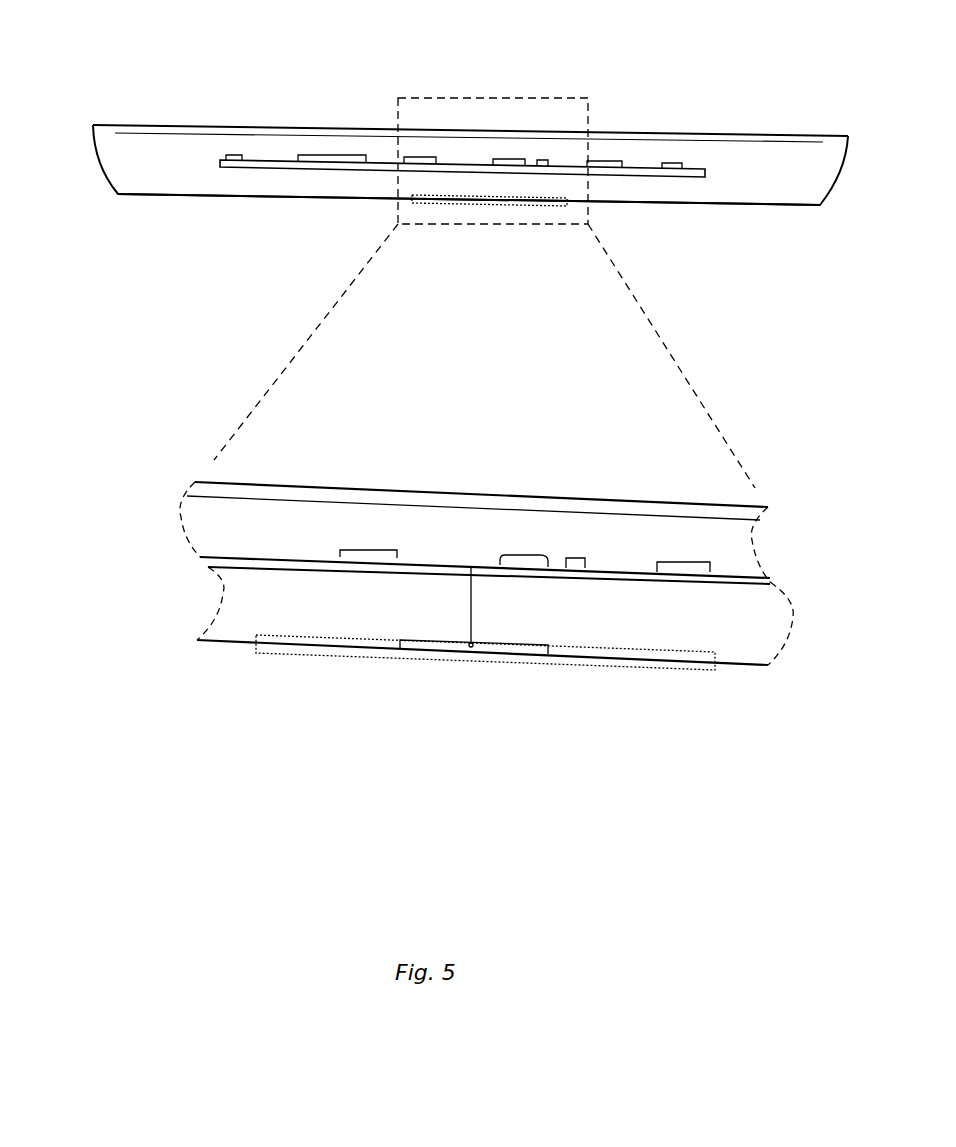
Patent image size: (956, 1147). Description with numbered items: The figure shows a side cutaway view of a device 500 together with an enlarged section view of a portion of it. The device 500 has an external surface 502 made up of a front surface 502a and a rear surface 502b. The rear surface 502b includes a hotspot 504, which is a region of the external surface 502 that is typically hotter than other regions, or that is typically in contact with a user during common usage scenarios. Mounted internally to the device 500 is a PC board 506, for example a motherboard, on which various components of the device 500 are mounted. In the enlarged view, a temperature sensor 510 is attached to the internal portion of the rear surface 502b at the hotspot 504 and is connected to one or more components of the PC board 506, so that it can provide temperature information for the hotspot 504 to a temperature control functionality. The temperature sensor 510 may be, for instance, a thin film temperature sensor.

The device 500 is at (443, 113).
The external surface 502 is at (147, 125).
The front surface 502a is at (293, 125).
The rear surface 502b is at (293, 198).
The hotspot 504 is at (503, 207).
The PC board 506 is at (567, 167).
The temperature sensor 510 is at (485, 648).